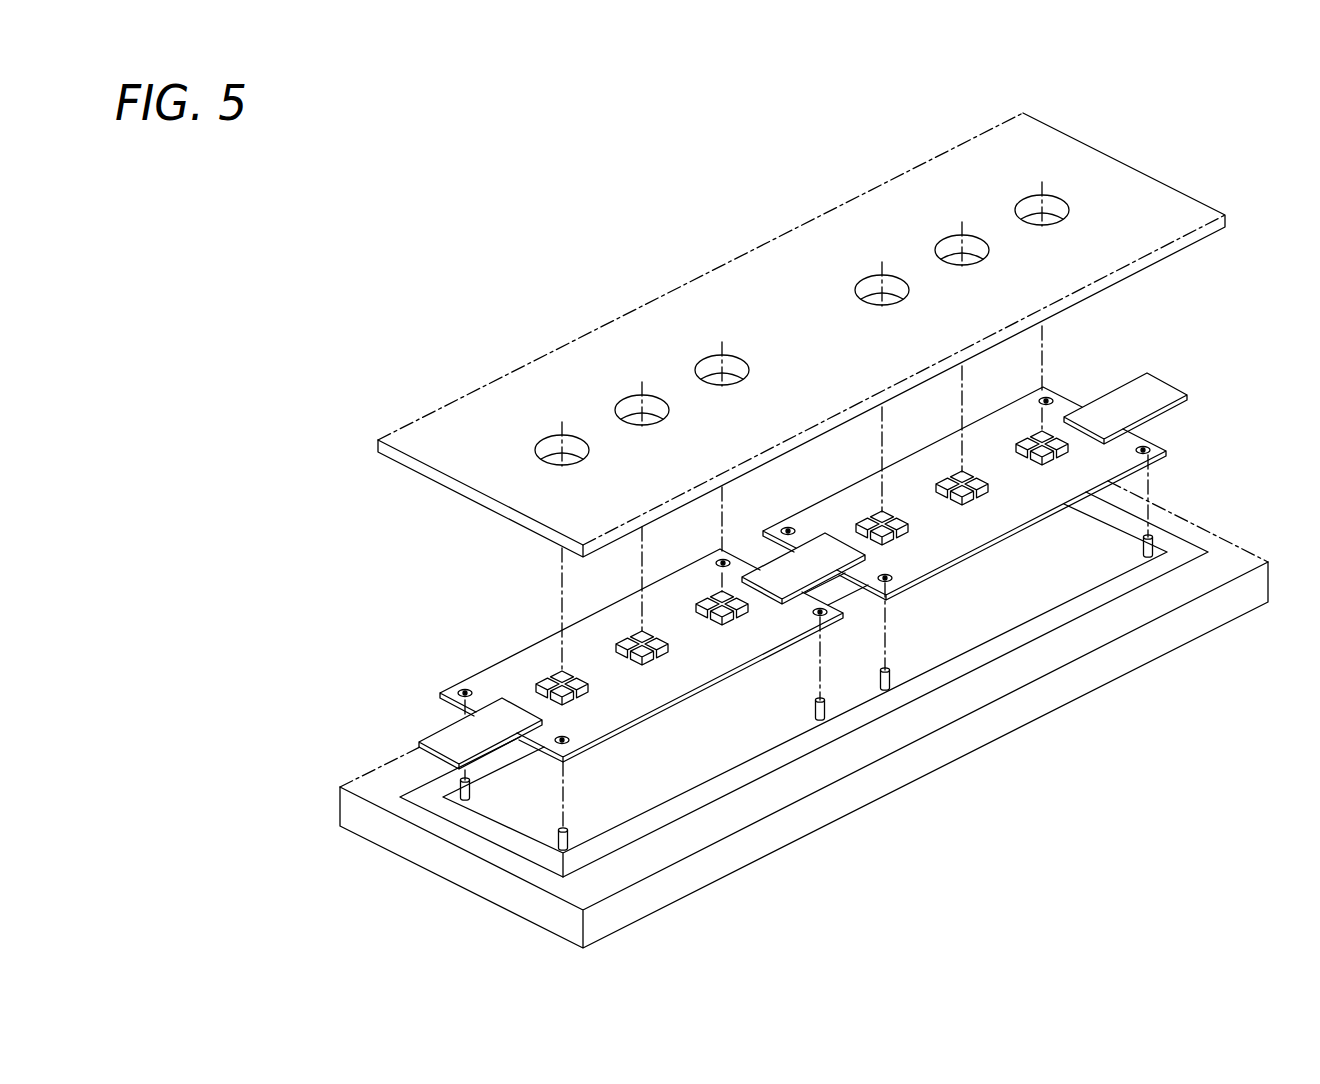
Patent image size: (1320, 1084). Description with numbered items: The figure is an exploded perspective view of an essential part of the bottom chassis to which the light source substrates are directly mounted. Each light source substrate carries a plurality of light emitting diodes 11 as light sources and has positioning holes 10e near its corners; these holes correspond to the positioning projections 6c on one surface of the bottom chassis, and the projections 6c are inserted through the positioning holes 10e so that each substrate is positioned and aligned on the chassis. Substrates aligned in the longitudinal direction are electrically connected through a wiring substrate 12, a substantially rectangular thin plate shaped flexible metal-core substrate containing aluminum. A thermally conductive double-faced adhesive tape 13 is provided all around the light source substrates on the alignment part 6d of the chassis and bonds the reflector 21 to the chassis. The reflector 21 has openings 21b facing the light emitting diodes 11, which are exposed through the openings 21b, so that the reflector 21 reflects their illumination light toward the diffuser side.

The reflector 21 is at (1135, 192).
The openings 21b is at (552, 440).
The light emitting diodes 11 is at (555, 677).
The positioning holes 10e is at (463, 690).
The wiring substrate 12 is at (457, 729).
The positioning projections 6c is at (453, 800).
The alignment part 6d is at (1135, 620).
The double-faced adhesive tape 13 is at (971, 667).